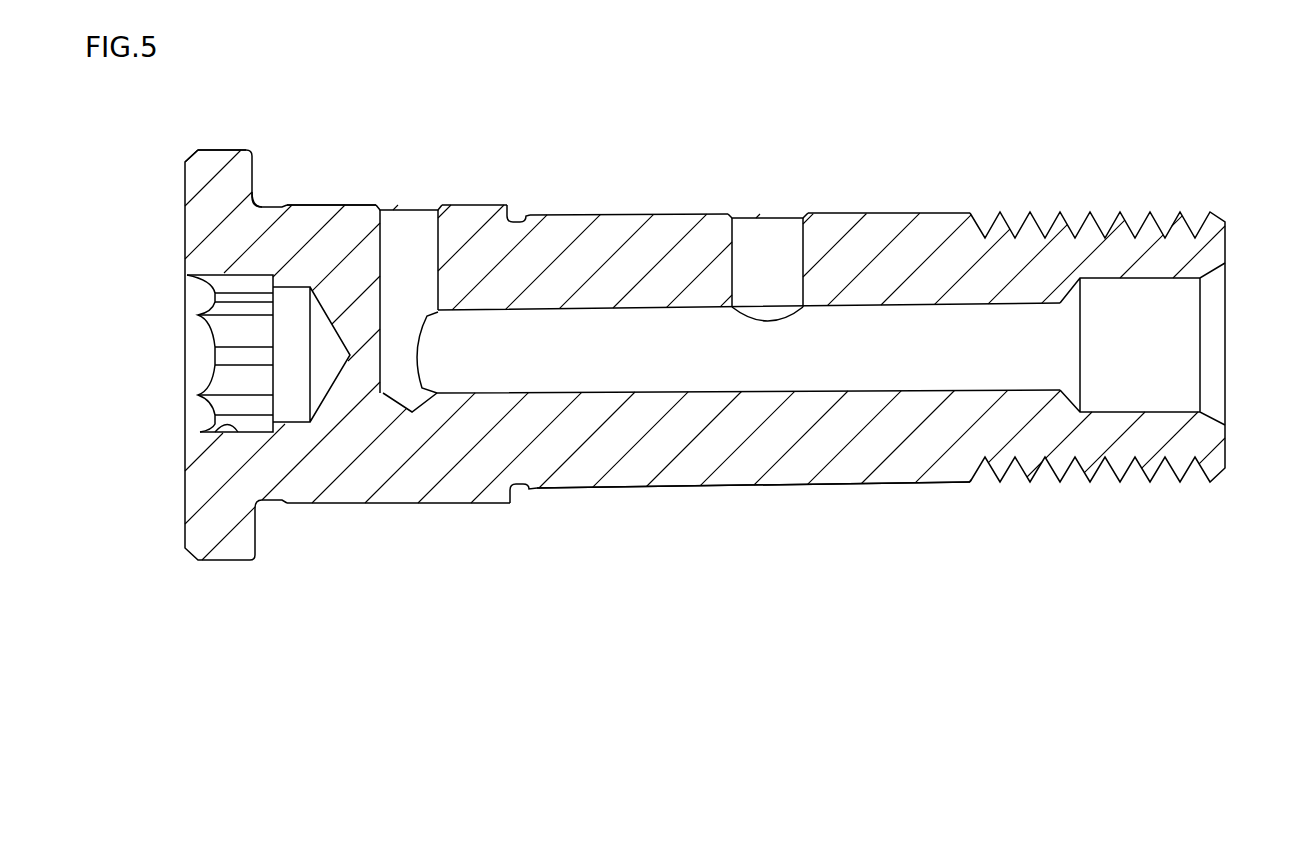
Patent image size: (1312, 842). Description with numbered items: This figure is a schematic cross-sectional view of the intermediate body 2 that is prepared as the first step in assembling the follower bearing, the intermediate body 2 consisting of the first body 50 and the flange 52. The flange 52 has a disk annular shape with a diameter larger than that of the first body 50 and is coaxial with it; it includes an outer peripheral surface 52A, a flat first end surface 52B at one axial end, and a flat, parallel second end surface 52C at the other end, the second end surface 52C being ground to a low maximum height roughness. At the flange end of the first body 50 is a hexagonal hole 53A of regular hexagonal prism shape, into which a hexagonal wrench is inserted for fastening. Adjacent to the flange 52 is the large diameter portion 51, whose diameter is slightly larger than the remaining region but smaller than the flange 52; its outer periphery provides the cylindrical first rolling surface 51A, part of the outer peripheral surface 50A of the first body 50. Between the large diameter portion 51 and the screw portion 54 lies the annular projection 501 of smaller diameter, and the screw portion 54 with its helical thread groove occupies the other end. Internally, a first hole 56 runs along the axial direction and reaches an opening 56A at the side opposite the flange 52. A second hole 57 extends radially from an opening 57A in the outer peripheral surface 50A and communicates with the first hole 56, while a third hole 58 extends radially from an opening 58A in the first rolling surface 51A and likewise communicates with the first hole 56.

The intermediate body 2 is at (1110, 147).
The first body 50 is at (680, 465).
The outer peripheral surface 50A is at (742, 487).
The annular projection 501 is at (553, 492).
The large diameter portion 51 is at (305, 207).
The first rolling surface 51A is at (350, 203).
The flange 52 is at (207, 182).
The outer peripheral surface 52A is at (220, 148).
The first end surface 52B is at (183, 164).
The second end surface 52C is at (254, 168).
The hexagonal hole 53A is at (236, 428).
The screw portion 54 is at (1072, 223).
The first hole 56 is at (852, 390).
The opening 56A is at (1215, 266).
The second hole 57 is at (735, 260).
The opening 57A is at (732, 220).
The third hole 58 is at (383, 253).
The opening 58A is at (438, 204).